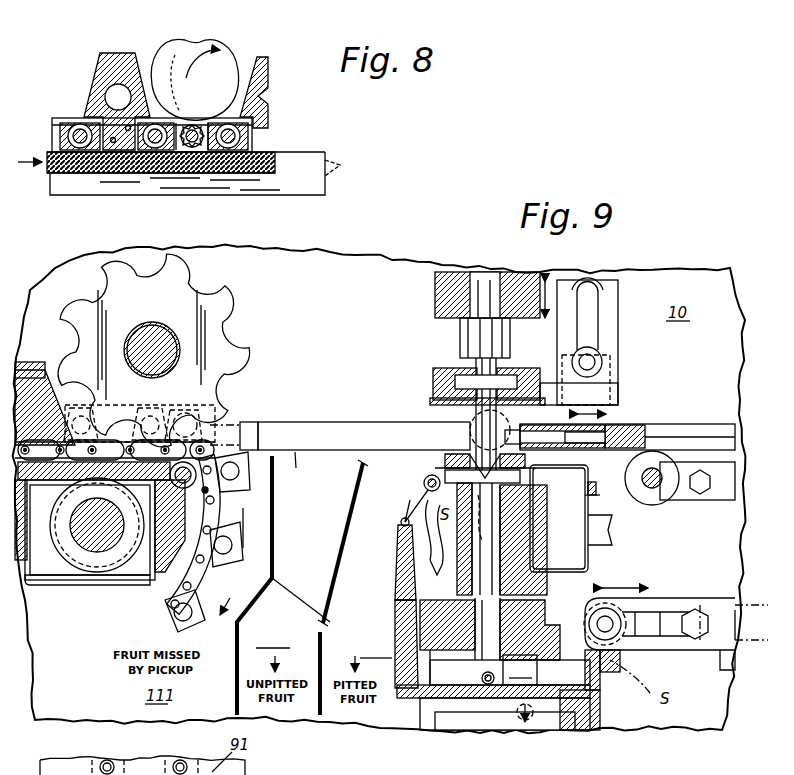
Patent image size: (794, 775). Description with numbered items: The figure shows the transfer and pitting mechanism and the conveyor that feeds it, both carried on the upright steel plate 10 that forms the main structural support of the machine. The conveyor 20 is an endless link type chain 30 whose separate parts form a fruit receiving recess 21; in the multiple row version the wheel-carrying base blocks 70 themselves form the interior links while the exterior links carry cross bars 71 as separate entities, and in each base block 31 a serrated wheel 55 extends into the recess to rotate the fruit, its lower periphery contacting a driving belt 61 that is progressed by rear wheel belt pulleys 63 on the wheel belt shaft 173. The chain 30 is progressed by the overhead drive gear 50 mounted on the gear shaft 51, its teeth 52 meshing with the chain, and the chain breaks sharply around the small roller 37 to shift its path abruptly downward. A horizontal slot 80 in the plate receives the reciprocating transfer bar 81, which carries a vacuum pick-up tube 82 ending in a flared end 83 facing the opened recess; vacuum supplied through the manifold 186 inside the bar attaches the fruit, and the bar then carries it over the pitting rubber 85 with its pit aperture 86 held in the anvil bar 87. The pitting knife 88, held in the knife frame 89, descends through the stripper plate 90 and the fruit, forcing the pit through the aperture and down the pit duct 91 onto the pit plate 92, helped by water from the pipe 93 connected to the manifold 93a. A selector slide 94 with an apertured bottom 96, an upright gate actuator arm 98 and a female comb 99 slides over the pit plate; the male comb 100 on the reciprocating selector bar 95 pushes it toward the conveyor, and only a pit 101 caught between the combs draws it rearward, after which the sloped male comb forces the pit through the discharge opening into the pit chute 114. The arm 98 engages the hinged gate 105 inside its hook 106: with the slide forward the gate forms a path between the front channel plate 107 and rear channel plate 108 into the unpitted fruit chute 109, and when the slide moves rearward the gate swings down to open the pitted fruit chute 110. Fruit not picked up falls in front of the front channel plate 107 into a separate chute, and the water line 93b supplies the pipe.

In FIG. 9, the upright steel plate 10 is at (748, 628).
In FIG. 9, the conveyor 20 is at (243, 510).
In FIG. 9, the fruit receiving recess 21 is at (180, 406).
In FIG. 8, the endless link type chain 30 is at (72, 122).
In FIG. 9, the endless link type chain 30 is at (192, 566).
In FIG. 8, the base block 31 is at (132, 165).
In FIG. 9, the small roller 37 is at (212, 490).
In FIG. 9, the overhead drive gear 50 is at (185, 328).
In FIG. 9, the gear shaft 51 is at (152, 350).
In FIG. 9, the teeth 52 is at (240, 394).
In FIG. 8, the wheel 55 is at (176, 160).
In FIG. 8, the driving belt 61 is at (270, 165).
In FIG. 9, the driving belt 61 is at (54, 582).
In FIG. 9, the rear wheel belt pulley 63 is at (93, 560).
In FIG. 8, the base block 70 is at (226, 160).
In FIG. 8, the cross bar 71 is at (130, 60).
In FIG. 9, the cross bar 71 is at (192, 620).
In FIG. 9, the horizontal slot 80 is at (375, 430).
In FIG. 9, the transfer bar 81 is at (310, 440).
In FIG. 9, the vacuum pick-up tube 82 is at (577, 414).
In FIG. 9, the flared end 83 is at (512, 430).
In FIG. 9, the pitting rubber 85 is at (445, 462).
In FIG. 9, the pit aperture 86 is at (423, 483).
In FIG. 9, the anvil bar 87 is at (583, 500).
In FIG. 9, the pitting knife 88 is at (473, 365).
In FIG. 9, the knife frame 89 is at (448, 292).
In FIG. 9, the stripper plate 90 is at (440, 383).
In FIG. 9, the pit duct 91 is at (515, 586).
In FIG. 9, the pit plate 92 is at (458, 690).
In FIG. 9, the pipe 93 is at (540, 475).
In FIG. 9, the manifold 93a is at (574, 545).
In FIG. 9, the control box lead 93b is at (548, 690).
In FIG. 9, the selector slide 94 is at (405, 688).
In FIG. 9, the selector bar 95 is at (640, 640).
In FIG. 9, the apertured bottom 96 is at (520, 700).
In FIG. 9, the upright gate actuator arm 98 is at (400, 585).
In FIG. 9, the female comb 99 is at (520, 670).
In FIG. 9, the male comb 100 is at (435, 665).
In FIG. 9, the pit 101 is at (484, 675).
In FIG. 9, the gate 105 is at (362, 560).
In FIG. 9, the hook 106 is at (401, 522).
In FIG. 9, the front channel plate 107 is at (264, 592).
In FIG. 9, the rear channel plate 108 is at (325, 642).
In FIG. 9, the unpitted fruit chute 109 is at (273, 651).
In FIG. 9, the pitted fruit chute 110 is at (373, 656).
In FIG. 9, the pit chute 114 is at (492, 712).
In FIG. 9, the wheel belt shaft 173 is at (108, 535).
In FIG. 9, the manifold 186 is at (610, 430).